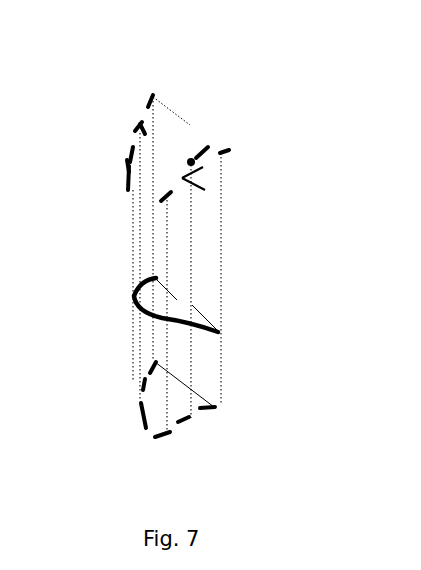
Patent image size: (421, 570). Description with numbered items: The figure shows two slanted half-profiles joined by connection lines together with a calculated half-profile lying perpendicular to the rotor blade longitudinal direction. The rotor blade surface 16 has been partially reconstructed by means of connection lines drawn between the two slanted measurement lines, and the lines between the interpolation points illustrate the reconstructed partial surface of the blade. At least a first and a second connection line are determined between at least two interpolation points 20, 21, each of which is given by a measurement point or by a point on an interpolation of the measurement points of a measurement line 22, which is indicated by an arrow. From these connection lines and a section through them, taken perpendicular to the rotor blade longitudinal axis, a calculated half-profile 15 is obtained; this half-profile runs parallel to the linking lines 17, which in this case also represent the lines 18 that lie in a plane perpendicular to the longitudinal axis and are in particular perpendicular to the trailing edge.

The half-profile 15 is at (130, 275).
The rotor blade surface 16 is at (84, 190).
The linking lines 17 is at (188, 122).
The line 18 is at (185, 300).
The interpolation point 20 is at (92, 113).
The interpolation point 21 is at (117, 81).
The measurement line 22 is at (183, 177).